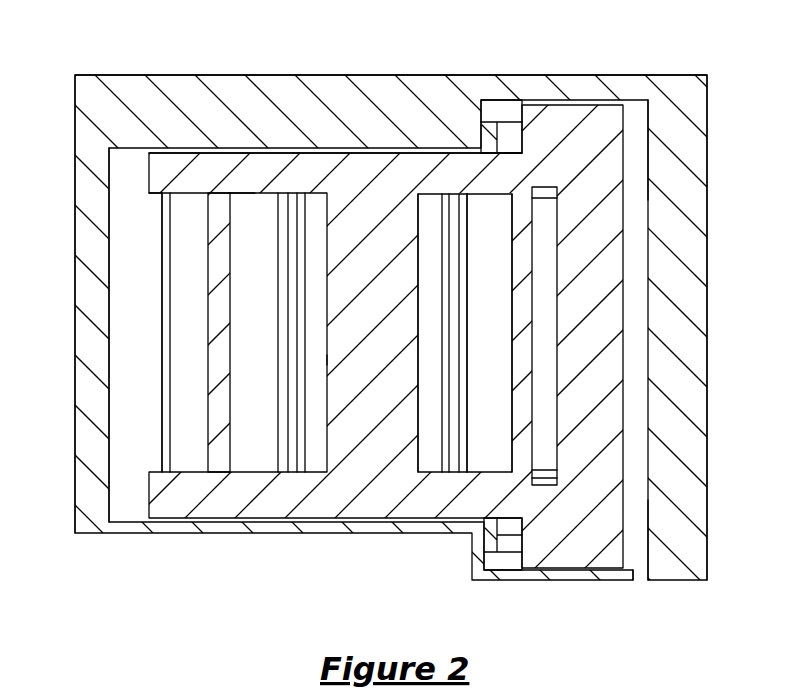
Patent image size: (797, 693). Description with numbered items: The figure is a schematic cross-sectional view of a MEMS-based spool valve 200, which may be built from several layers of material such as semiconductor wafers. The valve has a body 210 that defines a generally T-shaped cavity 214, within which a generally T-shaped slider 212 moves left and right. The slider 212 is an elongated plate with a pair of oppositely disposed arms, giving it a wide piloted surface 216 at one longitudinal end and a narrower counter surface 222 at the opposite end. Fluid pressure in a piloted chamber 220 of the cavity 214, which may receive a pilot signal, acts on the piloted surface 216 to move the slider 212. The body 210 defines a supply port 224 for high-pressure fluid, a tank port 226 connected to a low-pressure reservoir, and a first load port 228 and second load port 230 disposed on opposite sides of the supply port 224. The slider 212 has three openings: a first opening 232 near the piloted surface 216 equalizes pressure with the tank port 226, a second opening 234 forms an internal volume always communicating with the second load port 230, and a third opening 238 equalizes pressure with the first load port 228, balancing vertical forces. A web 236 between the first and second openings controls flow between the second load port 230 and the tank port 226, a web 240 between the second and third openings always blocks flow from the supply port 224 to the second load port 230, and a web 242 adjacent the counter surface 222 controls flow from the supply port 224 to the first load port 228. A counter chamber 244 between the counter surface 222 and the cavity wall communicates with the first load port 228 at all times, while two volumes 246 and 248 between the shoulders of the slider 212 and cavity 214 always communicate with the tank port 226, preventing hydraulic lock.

The MEMS-based spool valve 200 is at (244, 588).
The body 210 is at (180, 117).
The slider 212 is at (600, 169).
The cavity 214 is at (641, 103).
The piloted surface 216 is at (626, 185).
The piloted chamber 220 is at (648, 555).
The counter surface 222 is at (207, 332).
The supply port 224 is at (287, 220).
The tank port 226 is at (547, 200).
The first load port 228 is at (173, 427).
The second load port 230 is at (460, 318).
The first opening 232 is at (558, 463).
The second opening 234 is at (420, 414).
The web 236 is at (522, 317).
The third opening 238 is at (255, 198).
The web 240 is at (380, 190).
The web 242 is at (220, 405).
The counter chamber 244 is at (108, 347).
The volume 246 is at (497, 540).
The volume 248 is at (498, 140).